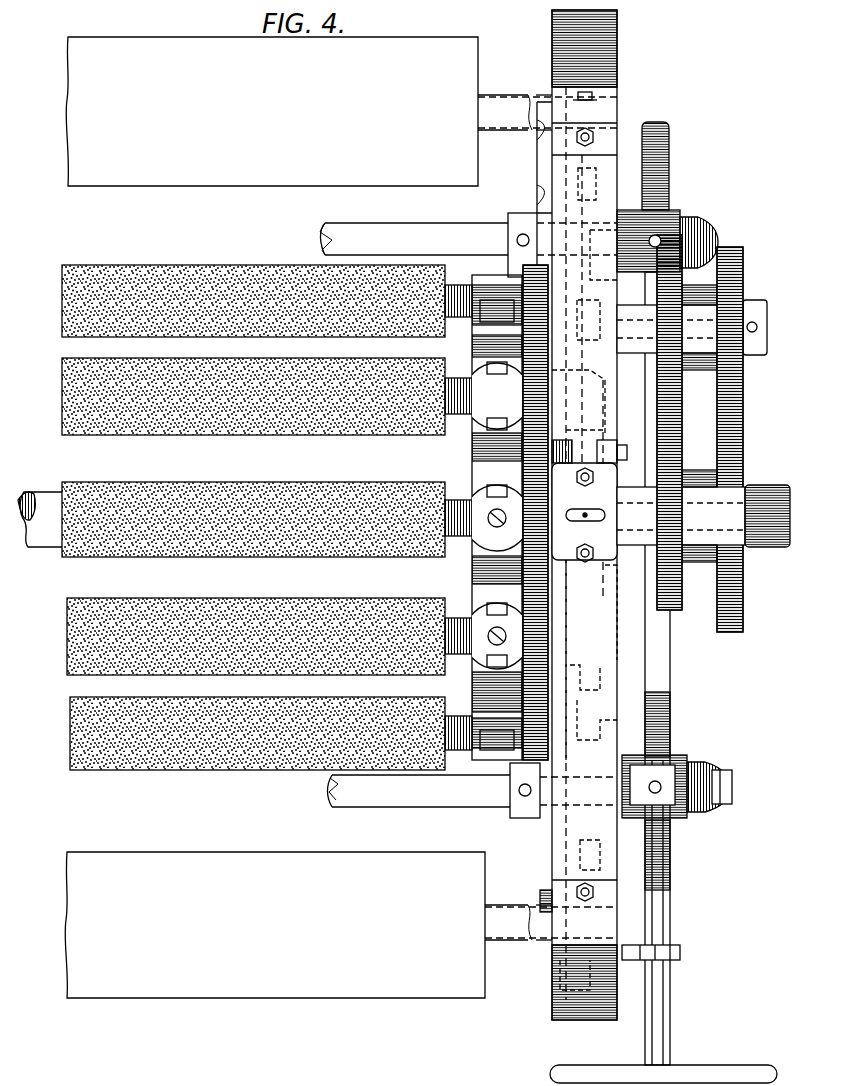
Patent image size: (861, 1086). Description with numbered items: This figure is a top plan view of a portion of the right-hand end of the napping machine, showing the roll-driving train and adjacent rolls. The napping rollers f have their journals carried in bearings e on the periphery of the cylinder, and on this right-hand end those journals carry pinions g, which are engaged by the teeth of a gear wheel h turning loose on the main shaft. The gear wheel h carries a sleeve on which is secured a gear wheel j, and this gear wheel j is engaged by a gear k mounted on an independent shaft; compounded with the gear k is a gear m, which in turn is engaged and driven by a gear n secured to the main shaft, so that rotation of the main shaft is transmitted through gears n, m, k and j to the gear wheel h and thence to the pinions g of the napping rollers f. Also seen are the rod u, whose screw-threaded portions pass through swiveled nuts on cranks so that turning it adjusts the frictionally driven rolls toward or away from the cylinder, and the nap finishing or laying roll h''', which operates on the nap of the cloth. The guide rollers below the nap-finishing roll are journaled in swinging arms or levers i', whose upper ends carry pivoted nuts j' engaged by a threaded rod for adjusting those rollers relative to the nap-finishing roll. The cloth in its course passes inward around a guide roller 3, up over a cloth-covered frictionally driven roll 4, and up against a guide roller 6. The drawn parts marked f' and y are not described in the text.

The nap finishing or laying roll h''' is at (272, 111).
The cloth-covered frictionally driven roll 4 is at (275, 925).
The guide roller 3 is at (551, 922).
The guide roller 6 is at (473, 790).
The napping rollers f is at (252, 500).
The driven roll f' is at (245, 499).
The bearings e is at (497, 517).
The pinions g is at (515, 262).
The gear wheel h is at (583, 660).
The gear wheel j is at (654, 226).
The nuts j' is at (661, 770).
The swinging arms or levers i' is at (706, 515).
The gear k is at (682, 395).
The gear m is at (743, 262).
The gear n is at (745, 460).
The rod u is at (655, 593).
The handle y is at (612, 1065).